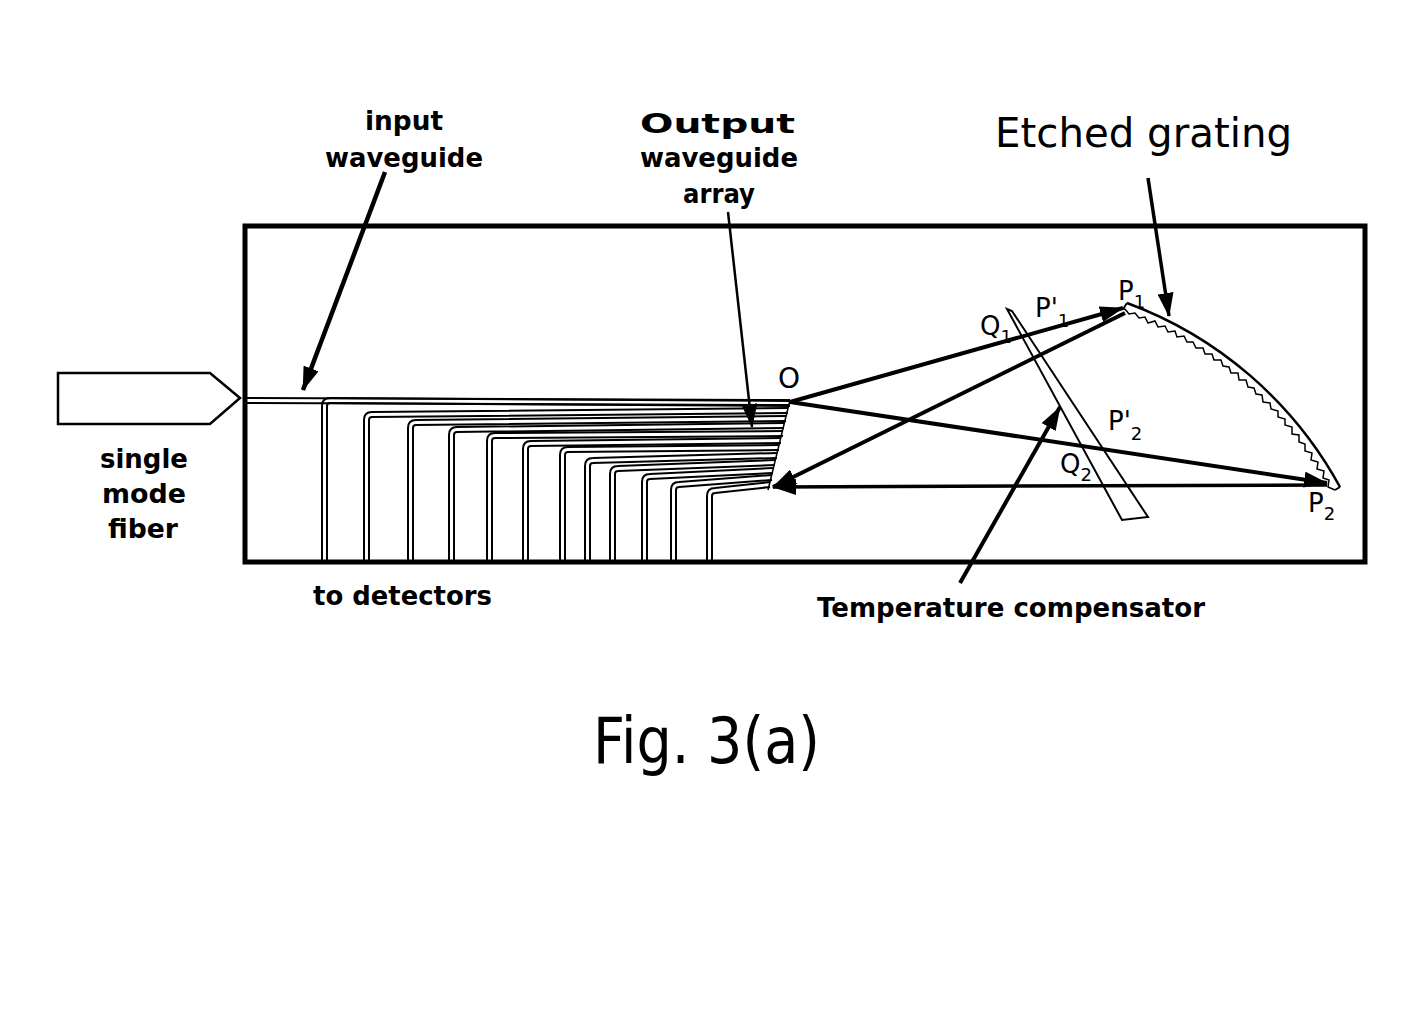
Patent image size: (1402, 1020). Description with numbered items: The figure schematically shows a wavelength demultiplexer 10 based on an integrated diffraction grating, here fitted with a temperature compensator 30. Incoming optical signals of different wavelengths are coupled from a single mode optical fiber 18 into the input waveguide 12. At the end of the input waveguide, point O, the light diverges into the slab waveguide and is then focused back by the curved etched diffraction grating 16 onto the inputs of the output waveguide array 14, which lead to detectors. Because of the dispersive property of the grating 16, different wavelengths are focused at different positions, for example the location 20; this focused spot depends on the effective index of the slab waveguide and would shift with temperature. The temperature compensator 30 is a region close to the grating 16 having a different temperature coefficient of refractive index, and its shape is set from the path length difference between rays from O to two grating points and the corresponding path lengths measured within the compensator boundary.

The wavelength demultiplexer 10 is at (837, 217).
The input waveguide array 12 is at (323, 393).
The output waveguide array 14 is at (595, 573).
The etched diffraction grating 16 is at (1225, 365).
The optical fiber 18 is at (140, 370).
The location of focused spot 20 is at (800, 470).
The temperature compensator 30 is at (1123, 493).